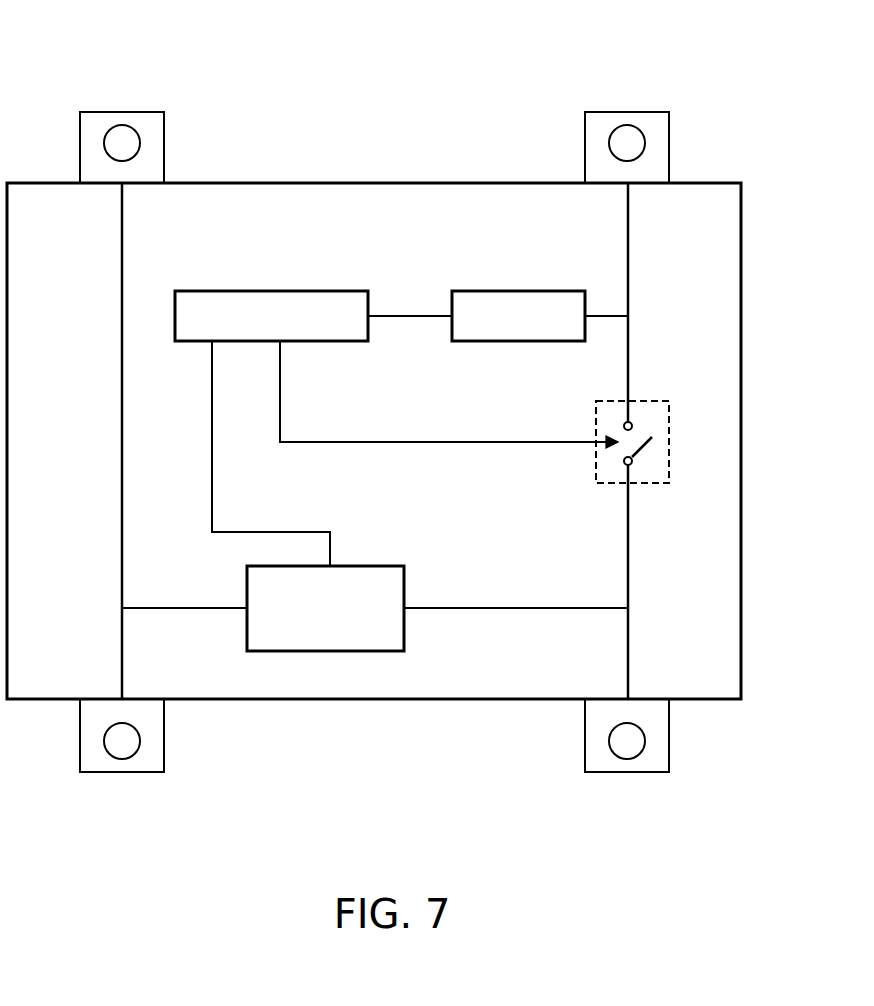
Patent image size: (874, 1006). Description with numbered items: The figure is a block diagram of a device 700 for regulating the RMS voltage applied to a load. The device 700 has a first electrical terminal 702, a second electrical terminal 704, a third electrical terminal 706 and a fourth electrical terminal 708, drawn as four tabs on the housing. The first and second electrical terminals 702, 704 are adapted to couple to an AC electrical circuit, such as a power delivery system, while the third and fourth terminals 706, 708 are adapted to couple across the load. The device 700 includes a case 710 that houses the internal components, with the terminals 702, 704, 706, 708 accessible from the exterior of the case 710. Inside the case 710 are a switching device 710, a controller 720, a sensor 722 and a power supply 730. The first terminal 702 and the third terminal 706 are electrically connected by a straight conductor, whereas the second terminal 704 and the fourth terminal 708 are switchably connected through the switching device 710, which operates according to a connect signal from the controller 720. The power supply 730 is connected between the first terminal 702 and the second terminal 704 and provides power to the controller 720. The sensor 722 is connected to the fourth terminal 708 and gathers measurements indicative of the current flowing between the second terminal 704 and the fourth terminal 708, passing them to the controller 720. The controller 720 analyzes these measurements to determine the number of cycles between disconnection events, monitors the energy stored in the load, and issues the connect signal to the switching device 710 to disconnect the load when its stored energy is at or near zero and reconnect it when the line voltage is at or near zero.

The device 700 is at (93, 68).
The first electrical terminal 702 is at (164, 737).
The second electrical terminal 704 is at (669, 737).
The third electrical terminal 706 is at (164, 153).
The fourth electrical terminal 708 is at (669, 153).
The case / switching device 710 is at (748, 238).
The controller 720 is at (290, 291).
The sensor 722 is at (551, 291).
The power supply 730 is at (383, 566).